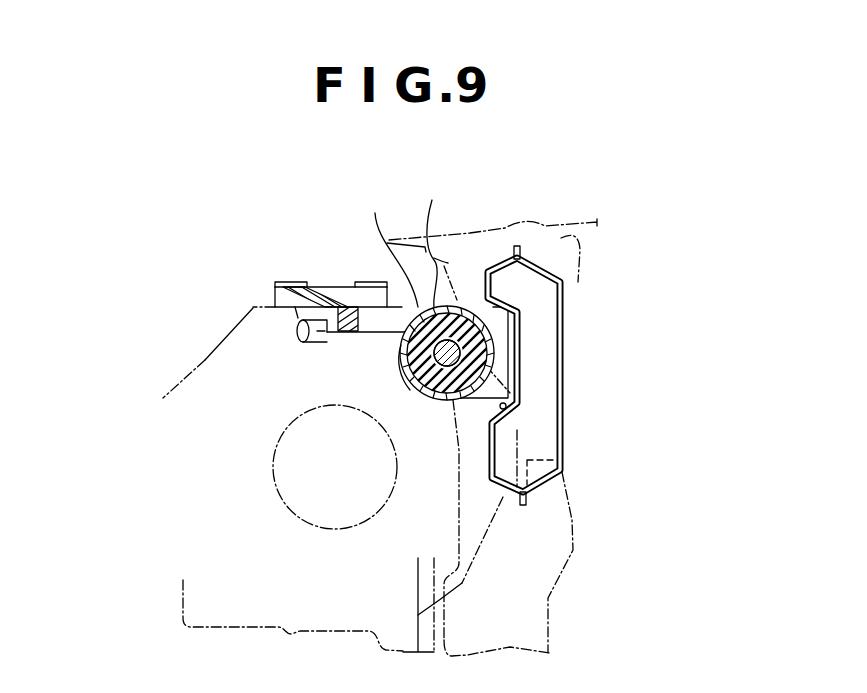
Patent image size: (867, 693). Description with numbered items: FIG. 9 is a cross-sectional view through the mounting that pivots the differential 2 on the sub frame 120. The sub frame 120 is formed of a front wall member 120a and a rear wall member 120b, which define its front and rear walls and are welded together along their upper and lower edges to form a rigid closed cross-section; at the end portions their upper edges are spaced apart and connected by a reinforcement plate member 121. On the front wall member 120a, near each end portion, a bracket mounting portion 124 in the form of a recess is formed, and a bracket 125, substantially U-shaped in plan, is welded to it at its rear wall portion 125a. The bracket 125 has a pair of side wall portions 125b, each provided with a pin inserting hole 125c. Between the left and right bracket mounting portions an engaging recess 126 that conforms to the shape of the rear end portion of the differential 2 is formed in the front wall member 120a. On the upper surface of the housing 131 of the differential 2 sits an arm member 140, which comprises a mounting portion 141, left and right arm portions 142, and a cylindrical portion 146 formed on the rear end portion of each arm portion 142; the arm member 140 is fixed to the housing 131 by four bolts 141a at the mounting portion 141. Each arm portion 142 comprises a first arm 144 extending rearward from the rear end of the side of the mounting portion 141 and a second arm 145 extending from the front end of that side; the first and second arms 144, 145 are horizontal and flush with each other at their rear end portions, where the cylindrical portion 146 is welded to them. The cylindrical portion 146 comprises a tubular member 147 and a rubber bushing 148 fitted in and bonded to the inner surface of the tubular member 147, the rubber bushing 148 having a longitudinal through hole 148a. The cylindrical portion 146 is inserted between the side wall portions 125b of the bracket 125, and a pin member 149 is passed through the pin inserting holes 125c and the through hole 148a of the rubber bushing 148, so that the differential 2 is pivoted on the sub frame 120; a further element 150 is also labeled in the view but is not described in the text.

The differential 2 is at (250, 629).
The sub frame 120 is at (670, 268).
The front wall member 120a is at (562, 296).
The rear wall member 120b is at (563, 325).
The reinforcement plate member 121 is at (586, 221).
The bracket mounting portion 124 is at (522, 428).
The bracket 125 is at (482, 307).
The rear wall portion 125a is at (524, 376).
The side wall portion 125b is at (468, 401).
The pin inserting hole 125c is at (386, 372).
The engaging recess 126 is at (561, 460).
The housing 131 is at (340, 622).
The arm member 140 is at (356, 265).
The mounting portion 141 is at (332, 287).
The bolt 141a is at (286, 282).
The arm portion 142 is at (303, 390).
The first arm 144 is at (372, 334).
The second arm 145 is at (293, 314).
The cylindrical portion 146 is at (382, 459).
The tubular member 147 is at (402, 394).
The rubber bushing 148 is at (417, 387).
The through hole 148a is at (409, 356).
The pin member 149 is at (428, 239).
The wall 150 is at (381, 246).